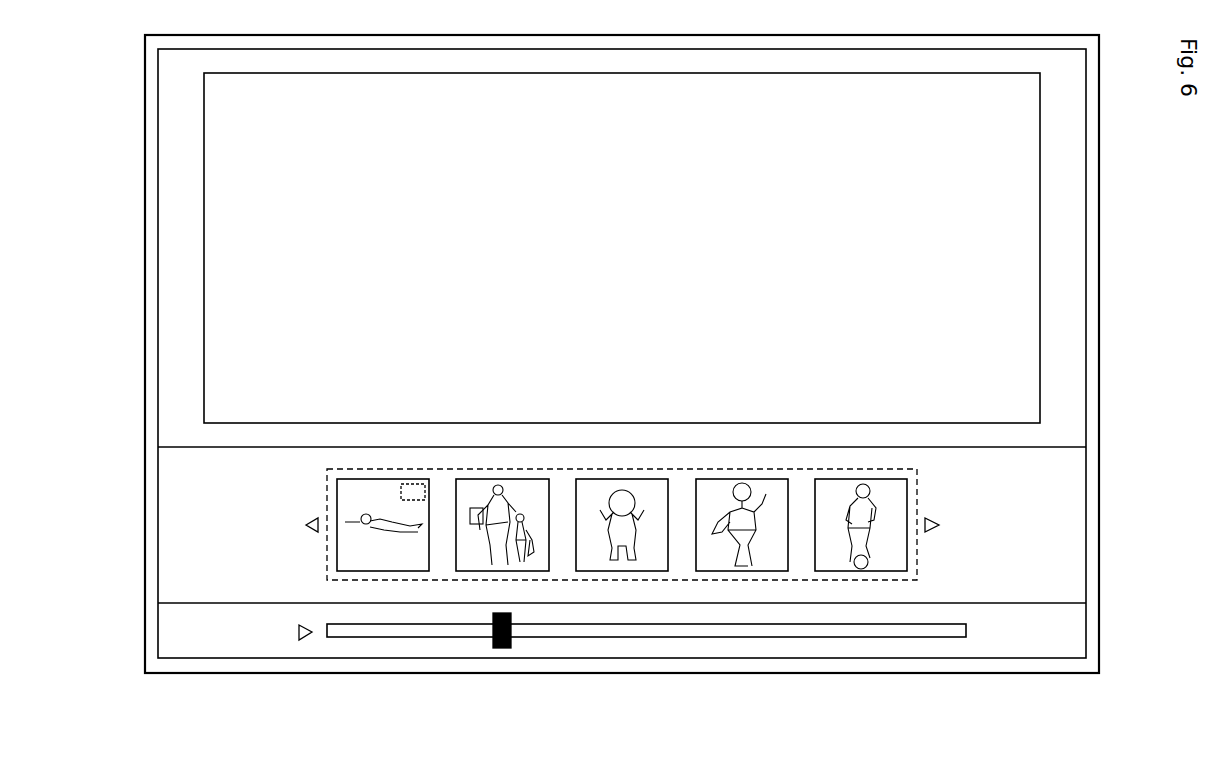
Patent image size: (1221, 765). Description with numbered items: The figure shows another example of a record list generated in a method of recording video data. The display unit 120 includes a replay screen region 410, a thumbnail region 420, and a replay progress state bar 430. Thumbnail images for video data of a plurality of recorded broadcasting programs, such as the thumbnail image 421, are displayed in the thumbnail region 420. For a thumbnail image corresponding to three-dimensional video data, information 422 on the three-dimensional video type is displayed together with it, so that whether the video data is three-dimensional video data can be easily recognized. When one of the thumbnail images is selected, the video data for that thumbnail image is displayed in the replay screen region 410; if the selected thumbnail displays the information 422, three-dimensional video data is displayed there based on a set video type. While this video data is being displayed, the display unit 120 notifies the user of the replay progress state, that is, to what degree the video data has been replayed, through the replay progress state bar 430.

The display unit 120 is at (1086, 414).
The replay screen region 410 is at (1040, 246).
The thumbnail region 420 is at (559, 469).
The thumbnail image 421 is at (397, 571).
The information on the 3D video type 422 is at (399, 487).
The replay progress state bar 430 is at (858, 637).